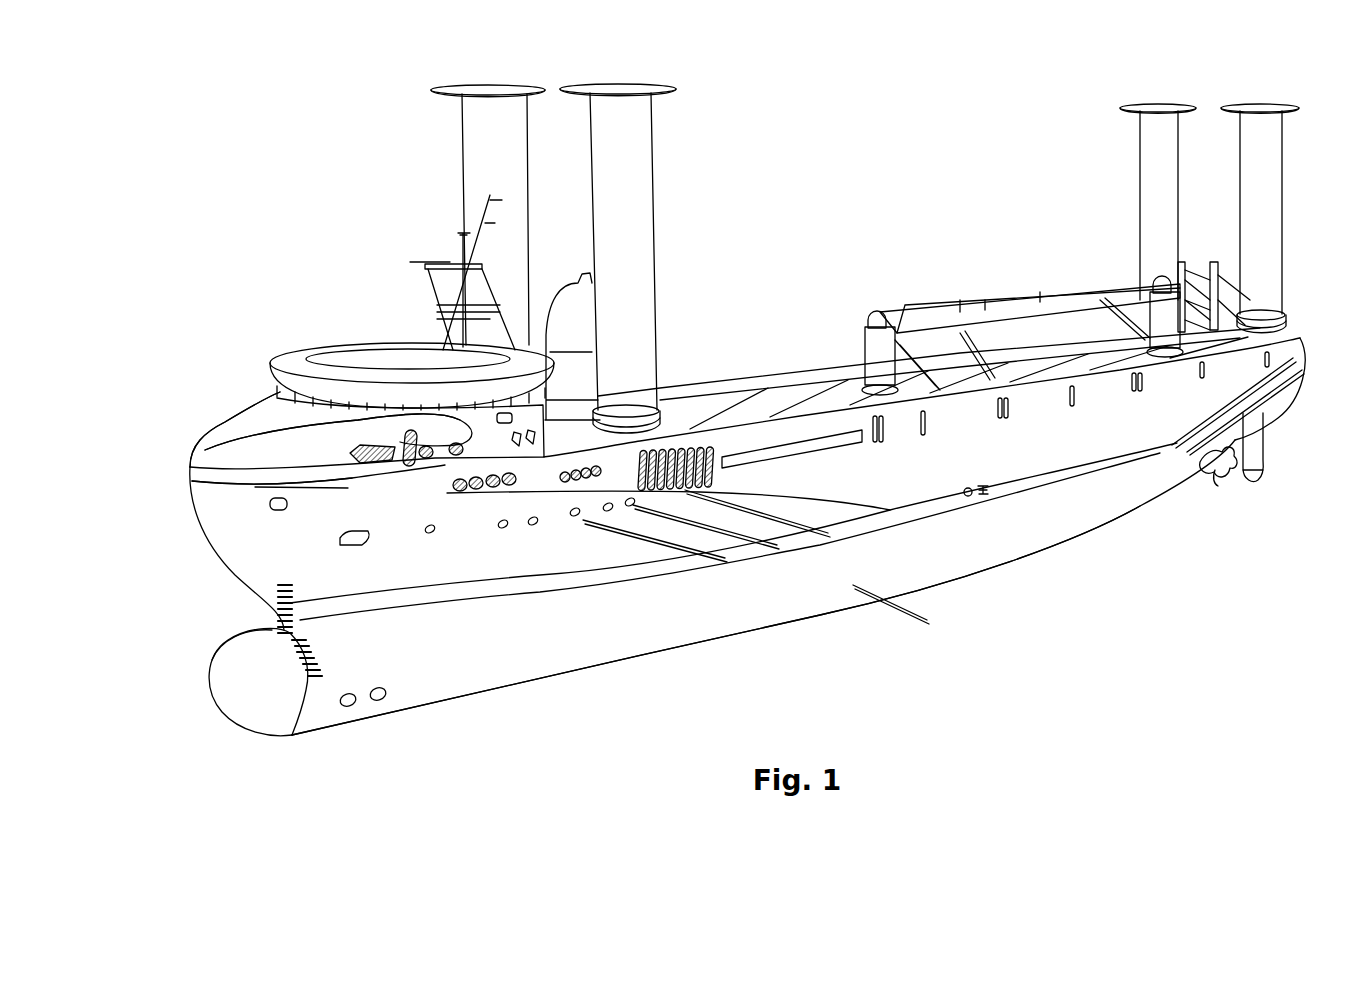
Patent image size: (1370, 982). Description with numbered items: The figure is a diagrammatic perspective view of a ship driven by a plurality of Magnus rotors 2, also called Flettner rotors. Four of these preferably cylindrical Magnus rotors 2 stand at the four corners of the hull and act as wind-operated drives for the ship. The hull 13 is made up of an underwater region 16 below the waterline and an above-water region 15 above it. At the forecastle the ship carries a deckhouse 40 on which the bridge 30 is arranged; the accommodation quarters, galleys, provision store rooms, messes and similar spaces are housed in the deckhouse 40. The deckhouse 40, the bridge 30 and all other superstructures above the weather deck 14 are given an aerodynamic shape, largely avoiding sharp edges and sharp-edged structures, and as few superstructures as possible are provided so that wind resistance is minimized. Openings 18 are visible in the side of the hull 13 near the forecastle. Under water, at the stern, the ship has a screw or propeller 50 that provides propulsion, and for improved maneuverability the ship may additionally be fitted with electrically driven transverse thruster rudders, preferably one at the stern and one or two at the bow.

The Magnus rotor 2 is at (487, 160).
The hull 13 is at (897, 527).
The weather deck 14 is at (745, 392).
The above-water region 15 is at (1035, 455).
The underwater region 16 is at (855, 585).
The air openings / vents 18 is at (668, 445).
The bridge 30 is at (375, 402).
The deckhouse 40 is at (345, 468).
The screw 50 is at (1225, 472).